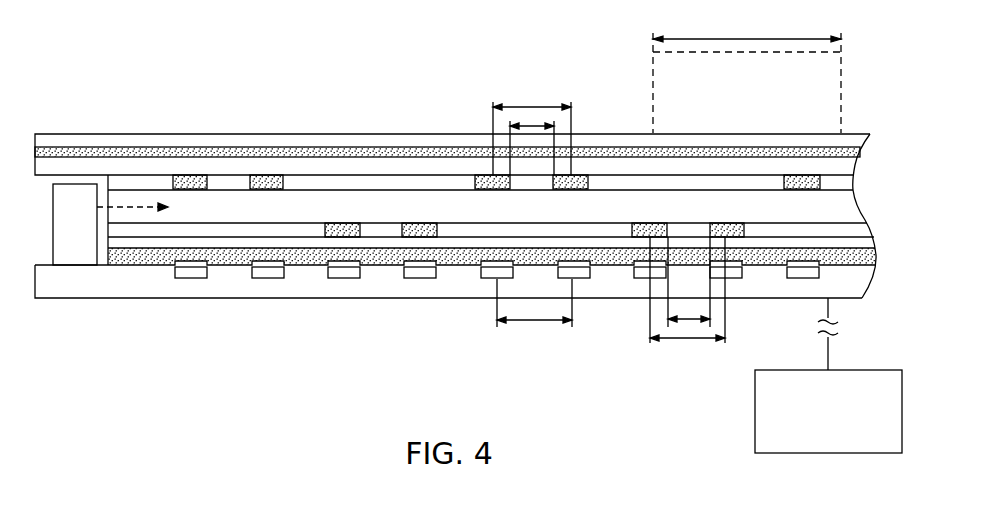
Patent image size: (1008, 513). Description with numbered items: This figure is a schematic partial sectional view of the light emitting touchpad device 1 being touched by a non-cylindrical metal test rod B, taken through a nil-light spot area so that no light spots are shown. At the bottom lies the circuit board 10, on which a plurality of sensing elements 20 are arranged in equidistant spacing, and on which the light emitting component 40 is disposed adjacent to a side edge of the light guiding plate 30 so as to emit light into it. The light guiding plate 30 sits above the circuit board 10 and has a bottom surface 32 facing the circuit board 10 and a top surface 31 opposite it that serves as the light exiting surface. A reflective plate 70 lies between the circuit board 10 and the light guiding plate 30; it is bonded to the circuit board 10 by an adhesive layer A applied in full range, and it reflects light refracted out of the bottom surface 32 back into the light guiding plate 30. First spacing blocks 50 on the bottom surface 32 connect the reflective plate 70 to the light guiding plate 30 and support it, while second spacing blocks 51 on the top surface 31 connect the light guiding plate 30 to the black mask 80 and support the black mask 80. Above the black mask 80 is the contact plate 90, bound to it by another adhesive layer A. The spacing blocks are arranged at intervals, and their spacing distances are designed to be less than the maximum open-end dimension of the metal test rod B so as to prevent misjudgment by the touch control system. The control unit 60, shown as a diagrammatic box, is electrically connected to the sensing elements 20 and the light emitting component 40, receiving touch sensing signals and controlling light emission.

The light emitting touchpad device 1 is at (117, 78).
The circuit board 10 is at (121, 290).
The sensing elements 20 is at (337, 278).
The light guiding plate 30 is at (835, 207).
The top surface 31 is at (845, 190).
The bottom surface 32 is at (857, 223).
The light emitting component 40 is at (60, 223).
The first spacing blocks 50 is at (355, 227).
The second spacing blocks 51 is at (185, 176).
The control unit 60 is at (828, 375).
The reflective plate 70 is at (867, 242).
The black mask 80 is at (47, 172).
The contact plate 90 is at (130, 143).
The adhesive layer A is at (267, 155).
The non-cylindrical metal test rod B is at (833, 92).